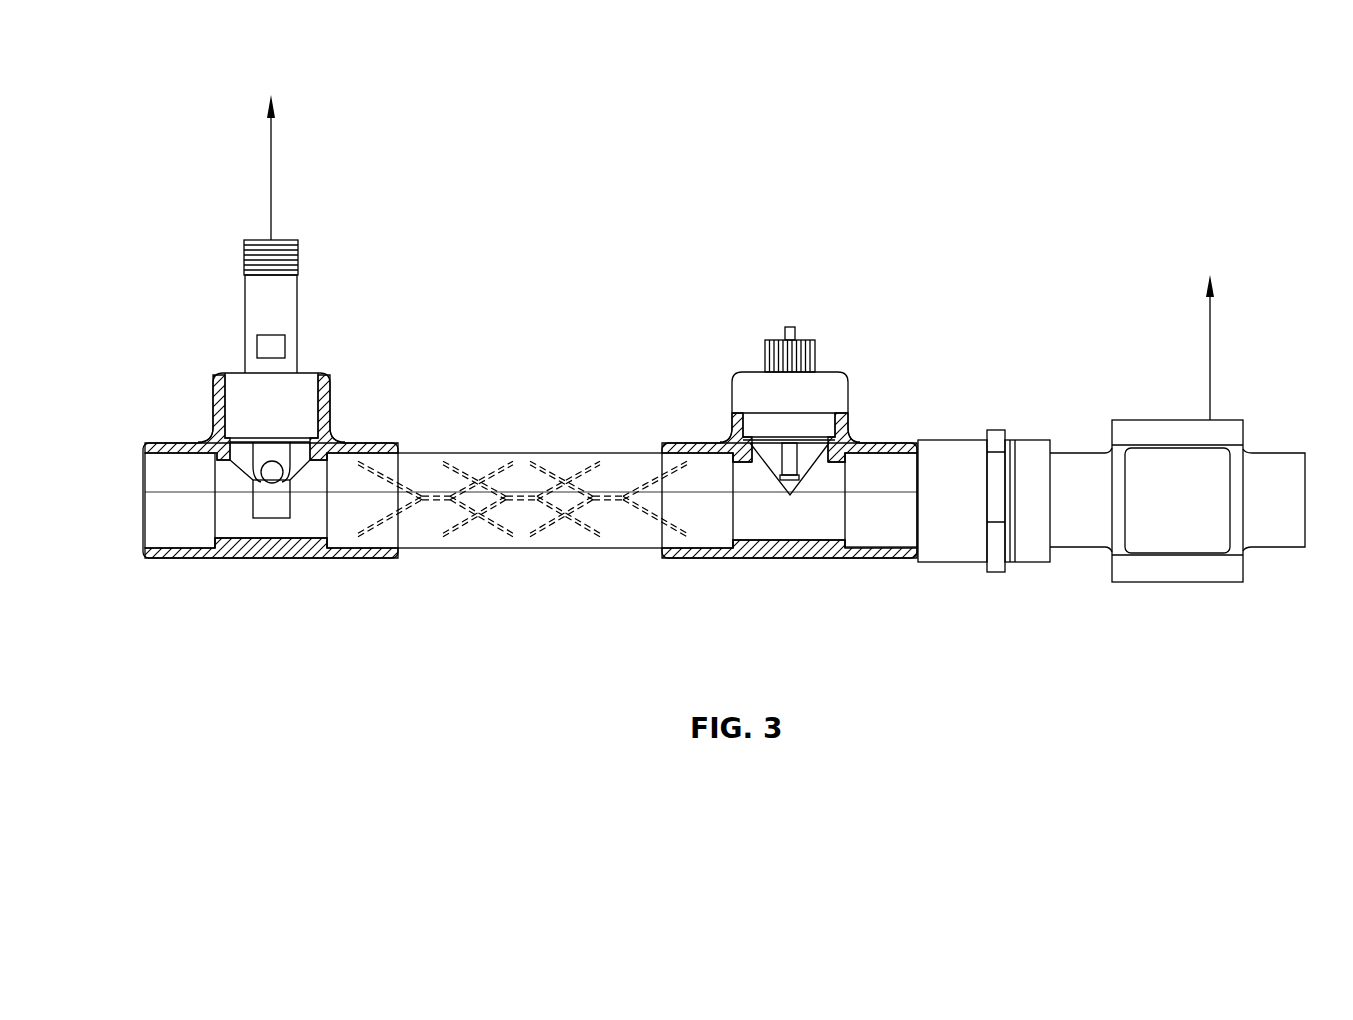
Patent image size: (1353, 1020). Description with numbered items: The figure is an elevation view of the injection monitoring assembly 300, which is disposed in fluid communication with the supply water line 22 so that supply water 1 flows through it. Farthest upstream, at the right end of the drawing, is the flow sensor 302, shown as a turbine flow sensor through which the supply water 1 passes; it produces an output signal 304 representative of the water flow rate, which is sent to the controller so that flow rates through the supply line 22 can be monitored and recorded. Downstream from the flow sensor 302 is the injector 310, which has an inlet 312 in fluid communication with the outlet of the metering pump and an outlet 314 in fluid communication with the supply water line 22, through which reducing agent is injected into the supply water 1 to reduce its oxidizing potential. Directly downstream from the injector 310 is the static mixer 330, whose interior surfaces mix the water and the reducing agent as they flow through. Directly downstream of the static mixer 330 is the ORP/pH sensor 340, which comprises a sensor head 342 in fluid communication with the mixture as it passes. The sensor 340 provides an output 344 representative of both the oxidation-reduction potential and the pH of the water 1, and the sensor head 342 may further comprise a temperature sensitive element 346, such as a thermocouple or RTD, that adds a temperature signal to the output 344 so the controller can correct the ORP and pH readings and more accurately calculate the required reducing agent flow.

The injection monitoring assembly 300 is at (742, 106).
The supply water line 22 is at (142, 538).
The supply water 1 is at (237, 536).
The static mixer 330 is at (512, 536).
The ORP/pH sensor 340 is at (300, 387).
The output 344 is at (271, 165).
The temperature sensitive element 346 is at (257, 503).
The sensor head 342 is at (278, 505).
The injector 310 is at (830, 391).
The inlet 312 is at (788, 327).
The outlet 314 is at (790, 493).
The flow sensor 302 is at (1165, 545).
The output signal 304 is at (1208, 318).